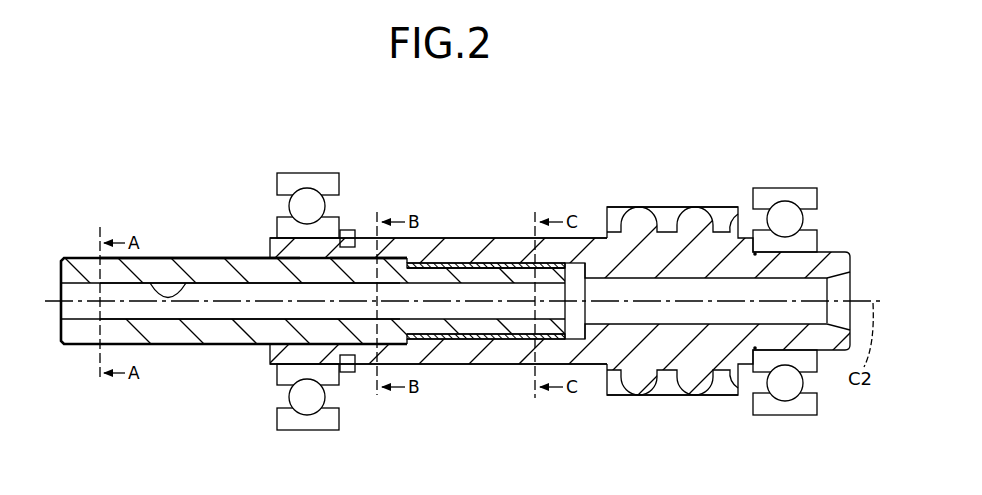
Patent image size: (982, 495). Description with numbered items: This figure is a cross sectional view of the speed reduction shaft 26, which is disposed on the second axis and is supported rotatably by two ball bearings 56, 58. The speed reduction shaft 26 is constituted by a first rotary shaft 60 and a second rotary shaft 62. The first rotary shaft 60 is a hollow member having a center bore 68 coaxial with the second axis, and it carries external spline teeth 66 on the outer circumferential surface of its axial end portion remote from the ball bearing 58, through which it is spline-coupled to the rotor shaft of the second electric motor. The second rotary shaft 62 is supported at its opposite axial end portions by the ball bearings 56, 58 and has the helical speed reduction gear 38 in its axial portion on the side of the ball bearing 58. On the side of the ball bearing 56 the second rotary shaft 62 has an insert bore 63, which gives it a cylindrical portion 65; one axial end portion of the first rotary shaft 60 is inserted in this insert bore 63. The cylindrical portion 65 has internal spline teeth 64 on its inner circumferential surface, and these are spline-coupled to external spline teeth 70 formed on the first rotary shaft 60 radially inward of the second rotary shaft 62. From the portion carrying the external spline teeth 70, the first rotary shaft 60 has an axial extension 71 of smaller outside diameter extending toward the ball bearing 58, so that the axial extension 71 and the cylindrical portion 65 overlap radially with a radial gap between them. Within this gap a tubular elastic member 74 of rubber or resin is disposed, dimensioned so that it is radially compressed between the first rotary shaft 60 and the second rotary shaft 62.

The speed reduction shaft 26 is at (520, 174).
The speed reduction gear 38 is at (637, 220).
The ball bearing 56 is at (307, 203).
The ball bearing 58 is at (784, 218).
The first rotary shaft 60 is at (218, 353).
The second rotary shaft 62 is at (579, 415).
The insert bore 63 is at (456, 276).
The internal spline teeth 64 is at (357, 259).
The cylindrical portion 65 is at (497, 250).
The external spline teeth 66 is at (156, 258).
The center bore 68 is at (186, 283).
The external spline teeth 70 is at (360, 370).
The axial extension 71 is at (477, 266).
The elastic member 74 is at (453, 339).